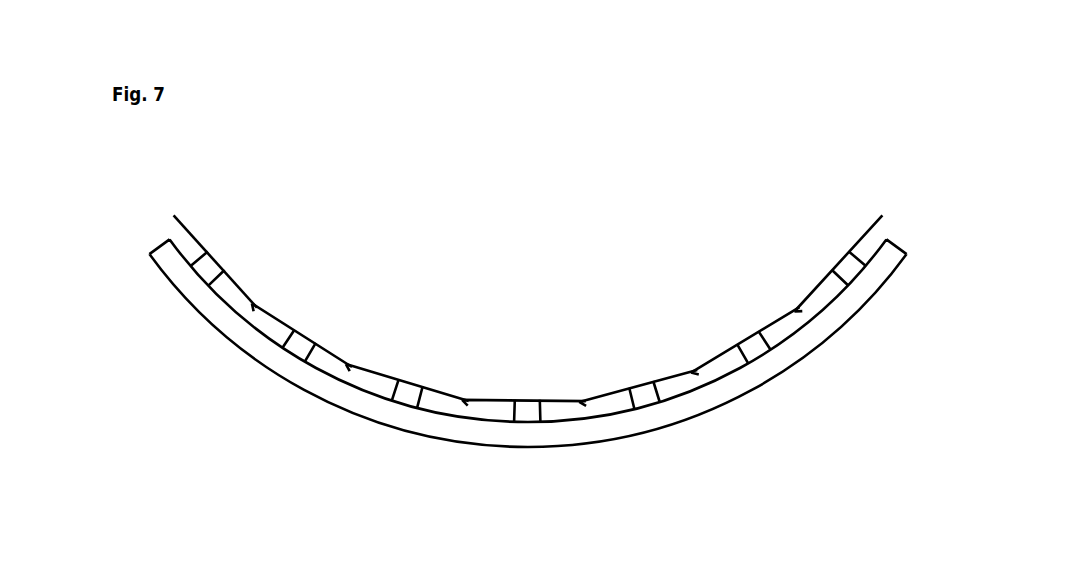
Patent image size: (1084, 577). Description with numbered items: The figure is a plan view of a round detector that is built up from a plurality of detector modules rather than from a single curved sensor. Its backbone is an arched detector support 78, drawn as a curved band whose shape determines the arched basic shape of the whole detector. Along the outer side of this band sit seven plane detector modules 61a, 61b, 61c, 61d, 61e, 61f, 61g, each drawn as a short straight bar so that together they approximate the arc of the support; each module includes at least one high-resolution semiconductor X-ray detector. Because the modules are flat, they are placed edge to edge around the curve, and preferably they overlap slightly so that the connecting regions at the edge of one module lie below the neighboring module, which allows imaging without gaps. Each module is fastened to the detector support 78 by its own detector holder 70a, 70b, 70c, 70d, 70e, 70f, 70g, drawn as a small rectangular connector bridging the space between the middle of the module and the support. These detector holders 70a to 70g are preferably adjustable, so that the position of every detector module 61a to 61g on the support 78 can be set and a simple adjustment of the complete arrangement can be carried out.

The detector support 78 is at (168, 258).
The detector module 61a is at (201, 243).
The detector module 61b is at (286, 326).
The detector module 61c is at (387, 375).
The detector module 61d is at (497, 398).
The detector module 61e is at (612, 393).
The detector module 61f is at (720, 356).
The detector module 61g is at (818, 286).
The detector holder 70a is at (204, 276).
The detector holder 70b is at (301, 350).
The detector holder 70c is at (411, 397).
The detector holder 70d is at (528, 414).
The detector holder 70e is at (648, 400).
The detector holder 70f is at (758, 348).
The detector holder 70g is at (852, 272).